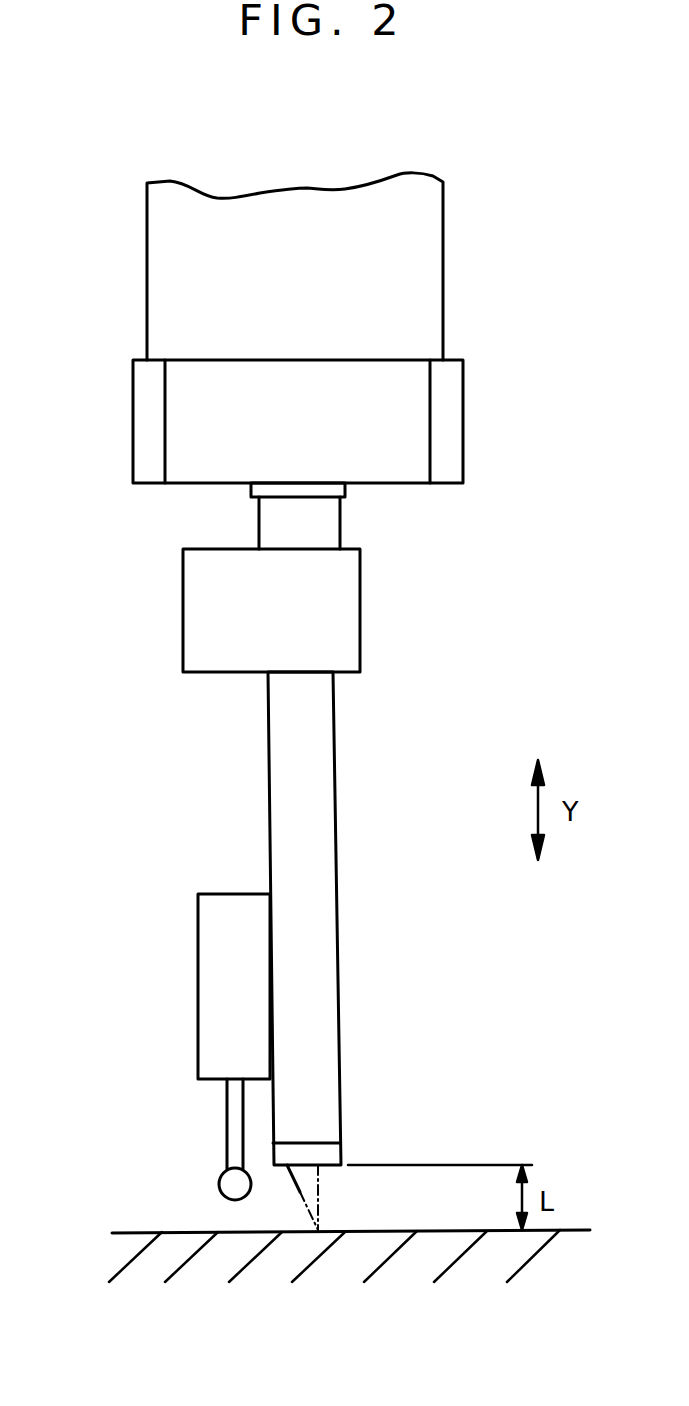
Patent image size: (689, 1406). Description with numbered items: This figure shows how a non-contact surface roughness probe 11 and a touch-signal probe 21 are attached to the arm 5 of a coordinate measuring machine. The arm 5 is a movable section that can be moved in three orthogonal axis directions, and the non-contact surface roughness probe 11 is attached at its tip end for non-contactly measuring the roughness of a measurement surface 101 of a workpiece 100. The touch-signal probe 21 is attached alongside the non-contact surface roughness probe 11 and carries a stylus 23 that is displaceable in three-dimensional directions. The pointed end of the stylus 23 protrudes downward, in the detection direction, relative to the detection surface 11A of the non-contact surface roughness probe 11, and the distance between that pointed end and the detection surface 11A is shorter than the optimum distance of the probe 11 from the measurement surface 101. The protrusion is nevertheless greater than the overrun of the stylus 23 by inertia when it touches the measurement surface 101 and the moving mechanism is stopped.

The arm 5 is at (423, 270).
The non-contact surface roughness probe 11 is at (322, 907).
The detection surface 11A is at (335, 1165).
The touch-signal probe 21 is at (212, 1003).
The stylus 23 is at (227, 1125).
The workpiece 100 is at (157, 1277).
The measurement surface 101 is at (163, 1232).